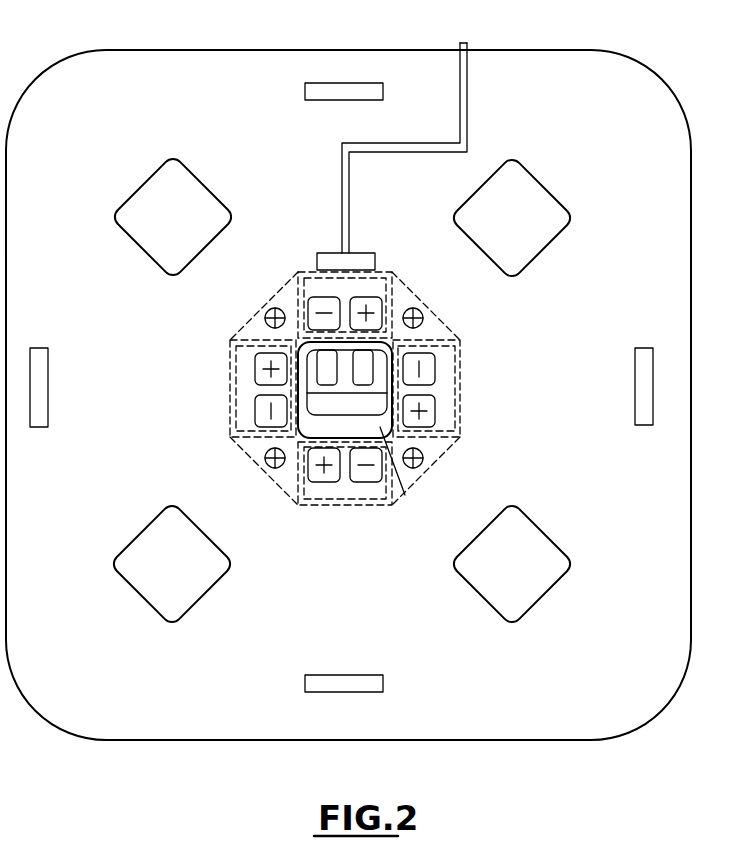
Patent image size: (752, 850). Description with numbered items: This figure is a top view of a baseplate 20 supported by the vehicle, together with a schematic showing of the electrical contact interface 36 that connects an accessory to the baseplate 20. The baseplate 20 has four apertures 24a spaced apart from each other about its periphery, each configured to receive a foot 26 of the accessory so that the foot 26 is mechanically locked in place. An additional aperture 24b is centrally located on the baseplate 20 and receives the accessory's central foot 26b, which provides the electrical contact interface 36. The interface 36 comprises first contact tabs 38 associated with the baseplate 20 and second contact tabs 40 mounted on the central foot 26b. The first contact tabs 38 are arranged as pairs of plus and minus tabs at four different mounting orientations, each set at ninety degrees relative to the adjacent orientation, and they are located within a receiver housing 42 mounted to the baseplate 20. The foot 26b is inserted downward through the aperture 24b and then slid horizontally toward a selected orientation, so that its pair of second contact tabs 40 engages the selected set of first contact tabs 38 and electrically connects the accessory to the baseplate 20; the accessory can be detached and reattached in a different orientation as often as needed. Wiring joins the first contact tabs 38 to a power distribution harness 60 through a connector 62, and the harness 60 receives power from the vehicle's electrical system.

The baseplate 20 is at (244, 78).
The apertures 24a is at (150, 217).
The additional aperture 24b is at (405, 495).
The foot 26 is at (394, 349).
The foot 26b is at (314, 406).
The electrical contact interface 36 is at (407, 282).
The first contact tabs 38 is at (257, 365).
The second contact tabs 40 is at (361, 355).
The receiver housing 42 is at (458, 446).
The power distribution harness 60 is at (467, 82).
The connector 62 is at (330, 262).